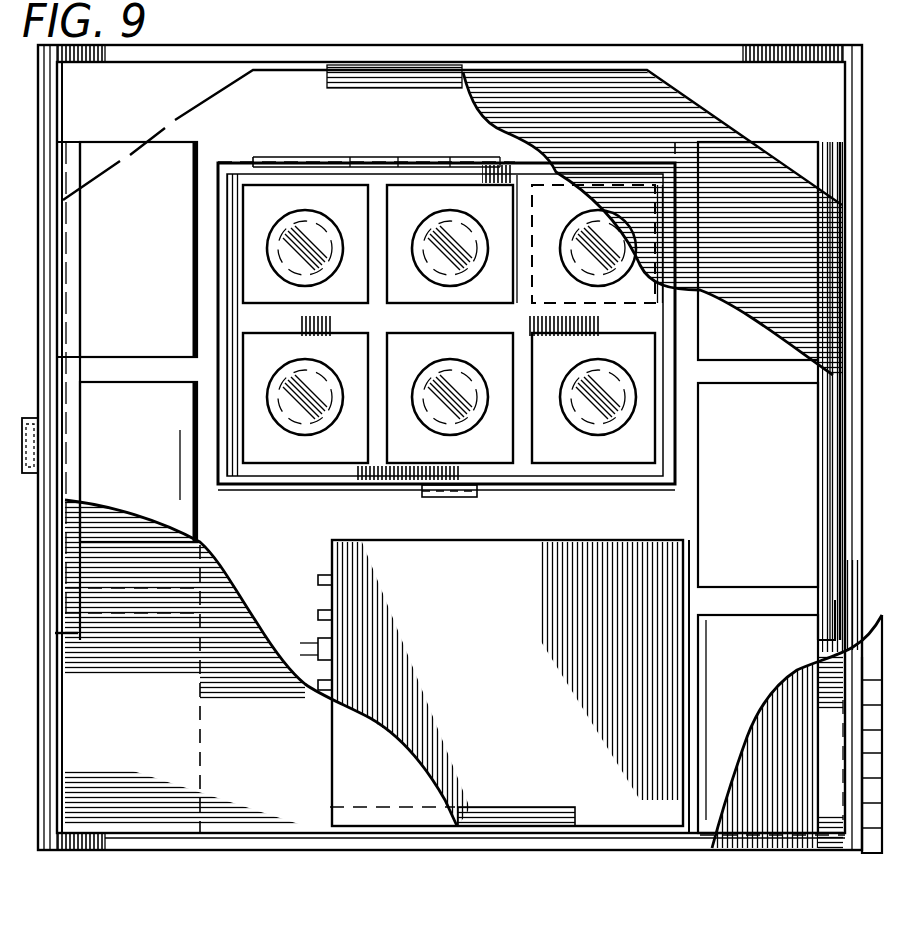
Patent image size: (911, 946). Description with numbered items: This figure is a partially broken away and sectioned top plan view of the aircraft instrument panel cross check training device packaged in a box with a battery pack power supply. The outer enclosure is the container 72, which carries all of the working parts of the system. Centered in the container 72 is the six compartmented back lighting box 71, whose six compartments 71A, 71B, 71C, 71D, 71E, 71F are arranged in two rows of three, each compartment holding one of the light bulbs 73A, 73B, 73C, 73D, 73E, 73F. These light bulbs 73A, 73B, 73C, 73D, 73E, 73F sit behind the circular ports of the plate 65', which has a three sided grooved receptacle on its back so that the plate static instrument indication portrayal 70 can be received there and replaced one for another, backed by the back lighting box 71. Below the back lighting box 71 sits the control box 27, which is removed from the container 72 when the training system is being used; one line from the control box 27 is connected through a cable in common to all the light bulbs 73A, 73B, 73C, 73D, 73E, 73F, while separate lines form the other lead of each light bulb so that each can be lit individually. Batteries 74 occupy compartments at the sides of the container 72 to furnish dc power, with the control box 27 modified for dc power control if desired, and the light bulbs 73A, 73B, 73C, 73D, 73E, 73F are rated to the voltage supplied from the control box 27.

The control box 27 is at (688, 670).
The plate 65' is at (425, 852).
The plate static instrument indication portrayal 70 is at (653, 490).
The six compartmented back lighting box 71 is at (222, 443).
The compartment 71A is at (250, 204).
The compartment 71B is at (402, 192).
The compartment 71C is at (553, 218).
The compartment 71D is at (650, 438).
The compartment 71E is at (502, 457).
The compartment 71F is at (324, 450).
The container 72 is at (187, 850).
The light bulb 73A is at (270, 244).
The light bulb 73B is at (452, 212).
The light bulb 73C is at (622, 244).
The light bulb 73D is at (627, 390).
The light bulb 73E is at (437, 428).
The light bulb 73F is at (300, 427).
The batteries 74 is at (146, 322).